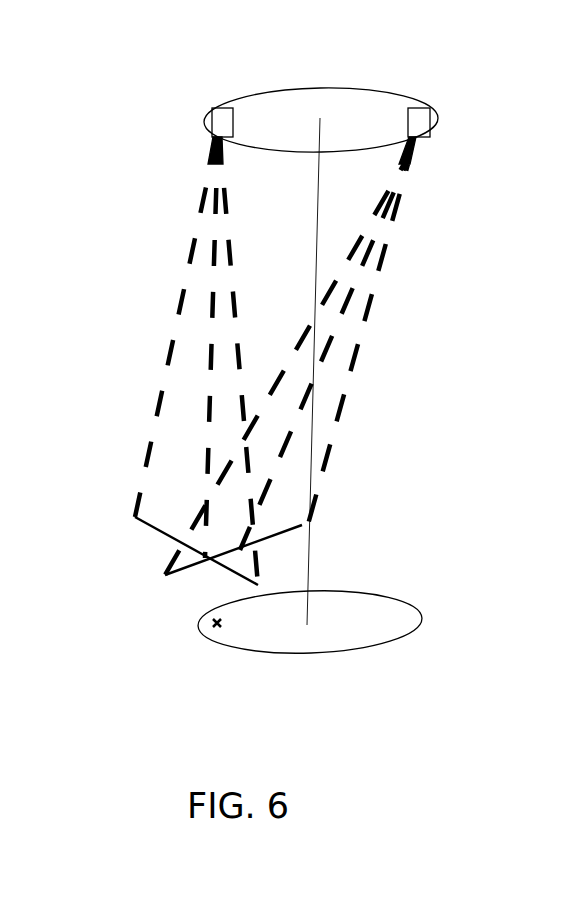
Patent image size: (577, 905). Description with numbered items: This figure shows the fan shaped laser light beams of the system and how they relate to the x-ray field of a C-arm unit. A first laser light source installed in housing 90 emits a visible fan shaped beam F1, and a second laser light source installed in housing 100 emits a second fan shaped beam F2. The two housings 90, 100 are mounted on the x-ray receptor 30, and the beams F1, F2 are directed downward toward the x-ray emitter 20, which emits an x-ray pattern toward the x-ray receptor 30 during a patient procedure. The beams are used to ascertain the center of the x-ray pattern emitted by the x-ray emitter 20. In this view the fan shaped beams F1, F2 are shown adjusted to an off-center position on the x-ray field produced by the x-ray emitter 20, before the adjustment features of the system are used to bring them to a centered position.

The x-ray emitter 20 is at (333, 663).
The x-ray receptor 30 is at (318, 85).
The housing 90 is at (437, 126).
The housing 100 is at (208, 134).
The fan shaped beam F1 is at (380, 313).
The fan shaped beam F2 is at (160, 305).